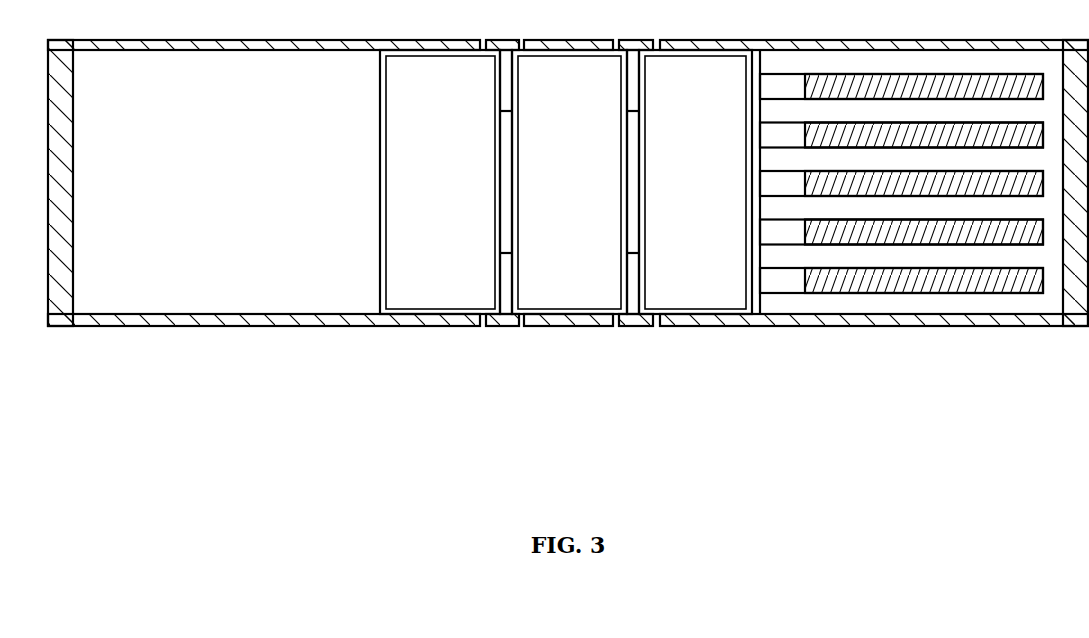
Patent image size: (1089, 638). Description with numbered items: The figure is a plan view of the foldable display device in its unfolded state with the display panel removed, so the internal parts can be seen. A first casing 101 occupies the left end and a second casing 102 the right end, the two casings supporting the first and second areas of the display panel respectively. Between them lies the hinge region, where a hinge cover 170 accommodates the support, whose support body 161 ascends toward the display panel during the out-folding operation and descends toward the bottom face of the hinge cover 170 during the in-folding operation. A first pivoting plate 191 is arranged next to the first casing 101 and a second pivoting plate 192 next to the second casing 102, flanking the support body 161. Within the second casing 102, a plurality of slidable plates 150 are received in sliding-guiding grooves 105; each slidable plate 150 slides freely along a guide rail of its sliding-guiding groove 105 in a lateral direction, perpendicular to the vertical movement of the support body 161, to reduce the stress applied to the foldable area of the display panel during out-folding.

The first casing 101 is at (165, 322).
The second casing 102 is at (1025, 326).
The first pivoting plate 191 is at (428, 292).
The hinge cover 170 is at (507, 326).
The support body 161 is at (577, 292).
The second pivoting plate 192 is at (688, 290).
The sliding-guiding groove 105 is at (782, 280).
The slidable plate 150 is at (913, 280).